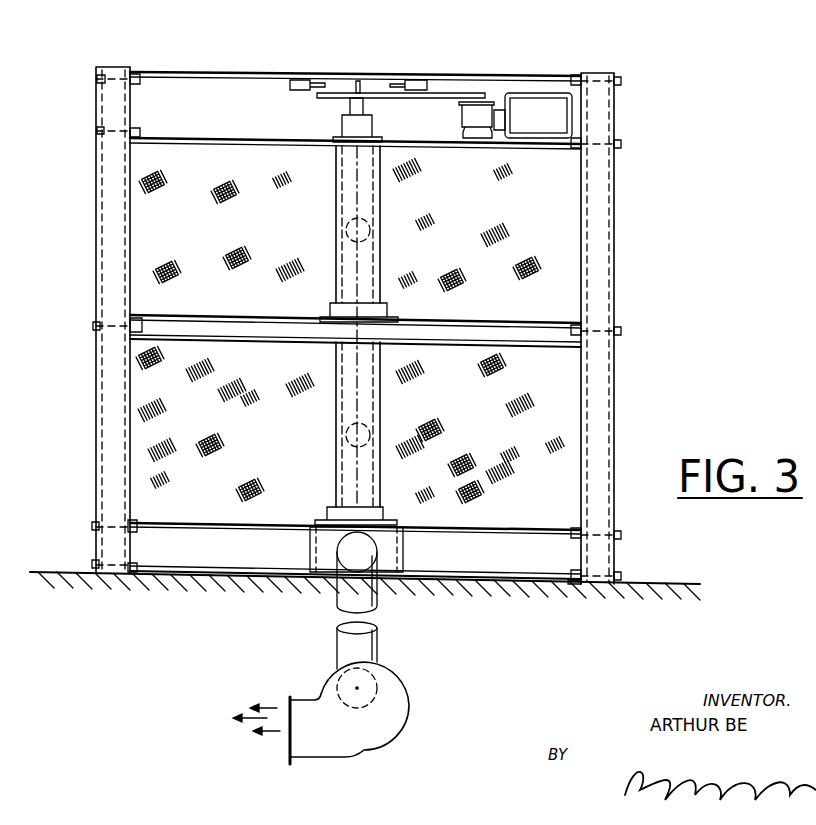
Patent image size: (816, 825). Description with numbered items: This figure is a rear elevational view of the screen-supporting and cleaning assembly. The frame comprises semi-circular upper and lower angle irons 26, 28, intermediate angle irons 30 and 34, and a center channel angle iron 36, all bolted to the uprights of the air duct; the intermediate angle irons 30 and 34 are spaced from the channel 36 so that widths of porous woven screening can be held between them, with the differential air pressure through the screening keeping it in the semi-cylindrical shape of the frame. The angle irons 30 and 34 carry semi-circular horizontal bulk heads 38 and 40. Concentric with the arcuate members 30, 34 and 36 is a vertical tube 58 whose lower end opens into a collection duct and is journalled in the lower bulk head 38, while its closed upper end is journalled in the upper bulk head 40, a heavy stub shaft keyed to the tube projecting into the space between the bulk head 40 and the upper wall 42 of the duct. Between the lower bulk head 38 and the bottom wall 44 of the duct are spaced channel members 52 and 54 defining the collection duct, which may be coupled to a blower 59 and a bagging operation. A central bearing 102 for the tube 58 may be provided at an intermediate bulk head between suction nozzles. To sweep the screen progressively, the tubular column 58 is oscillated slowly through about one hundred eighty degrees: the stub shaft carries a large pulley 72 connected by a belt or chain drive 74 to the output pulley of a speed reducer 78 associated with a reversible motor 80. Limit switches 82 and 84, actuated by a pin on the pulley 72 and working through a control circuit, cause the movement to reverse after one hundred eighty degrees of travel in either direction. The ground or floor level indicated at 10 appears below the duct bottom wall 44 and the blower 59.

The ground / floor level 10 is at (32, 547).
The upper angle iron 26 is at (575, 74).
The lower angle iron 28 is at (567, 587).
The intermediate angle iron 30 is at (567, 522).
The intermediate angle iron 34 is at (576, 150).
The channel angle iron 36 is at (588, 326).
The lower bulk head 38 is at (505, 530).
The upper bulk head 40 is at (525, 148).
The upper wall 42 is at (497, 80).
The bottom wall 44 is at (498, 568).
The channel member 52 is at (412, 556).
The channel member 54 is at (306, 556).
The vertical tube 58 is at (377, 224).
The blower 59 is at (407, 698).
The pulley 72 is at (340, 93).
The belt or chain drive 74 is at (440, 93).
The speed reducer 78 is at (472, 108).
The reversible motor 80 is at (538, 103).
The limit switch 82 is at (302, 79).
The limit switch 84 is at (410, 80).
The central bearing 102 is at (392, 314).